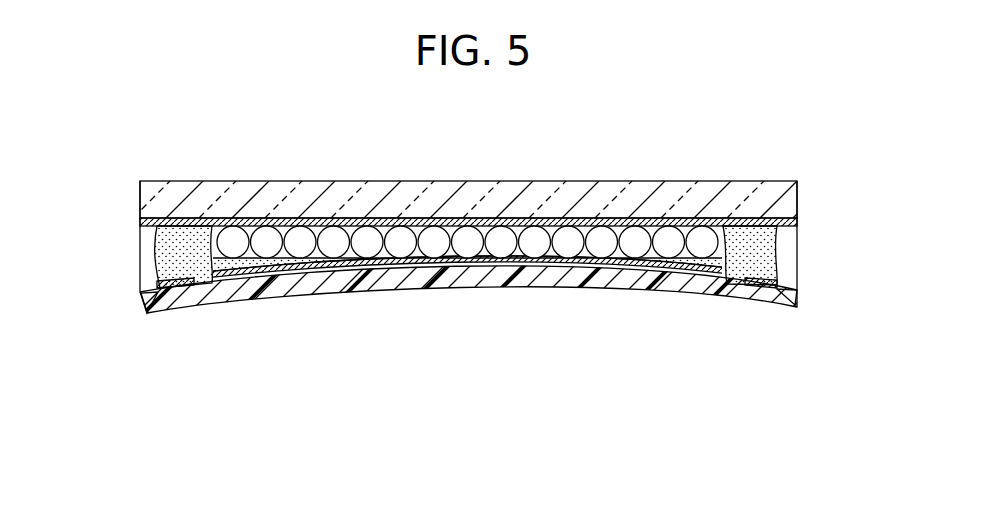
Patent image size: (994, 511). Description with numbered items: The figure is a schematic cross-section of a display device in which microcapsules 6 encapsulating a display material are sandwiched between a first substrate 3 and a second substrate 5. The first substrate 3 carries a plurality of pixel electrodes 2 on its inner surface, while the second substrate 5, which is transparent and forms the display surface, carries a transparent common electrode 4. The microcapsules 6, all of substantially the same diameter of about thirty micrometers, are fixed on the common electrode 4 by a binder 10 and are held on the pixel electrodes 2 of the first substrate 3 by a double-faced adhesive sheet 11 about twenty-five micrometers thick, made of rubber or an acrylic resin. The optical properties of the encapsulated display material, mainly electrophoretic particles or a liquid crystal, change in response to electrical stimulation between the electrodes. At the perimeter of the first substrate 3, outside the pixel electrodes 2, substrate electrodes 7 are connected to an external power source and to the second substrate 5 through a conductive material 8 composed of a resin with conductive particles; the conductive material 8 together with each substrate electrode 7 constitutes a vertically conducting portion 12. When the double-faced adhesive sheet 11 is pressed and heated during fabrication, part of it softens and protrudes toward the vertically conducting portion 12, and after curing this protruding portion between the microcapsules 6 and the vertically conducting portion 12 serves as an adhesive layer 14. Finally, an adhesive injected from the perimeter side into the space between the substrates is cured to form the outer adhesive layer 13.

The pixel electrode 2 is at (250, 284).
The first substrate 3 is at (665, 290).
The common electrode 4 is at (316, 226).
The second substrate 5 is at (365, 203).
The microcapsule 6 is at (303, 237).
The substrate electrode 7 is at (185, 306).
The conductive material 8 is at (150, 314).
The binder 10 is at (400, 255).
The double-faced adhesive sheet 11 is at (222, 284).
The vertically conducting portion 12 is at (138, 371).
The adhesive layer 13 is at (153, 256).
The adhesive layer 14 is at (197, 262).